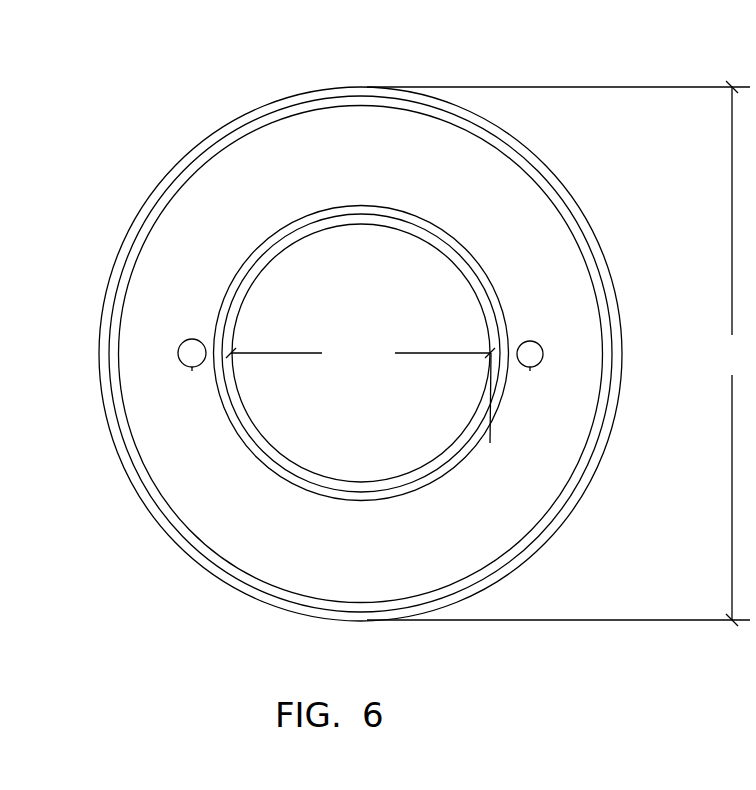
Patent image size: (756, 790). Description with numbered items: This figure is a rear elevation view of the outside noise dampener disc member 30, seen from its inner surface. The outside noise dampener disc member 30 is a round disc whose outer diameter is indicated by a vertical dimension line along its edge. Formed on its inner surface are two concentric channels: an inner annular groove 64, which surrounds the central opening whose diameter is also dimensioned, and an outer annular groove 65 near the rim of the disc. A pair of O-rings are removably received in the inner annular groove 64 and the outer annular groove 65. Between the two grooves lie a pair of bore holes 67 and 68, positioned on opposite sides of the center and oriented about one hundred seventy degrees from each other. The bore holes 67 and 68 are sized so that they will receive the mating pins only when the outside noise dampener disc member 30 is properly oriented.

The outside noise dampener disc member 30 is at (110, 156).
The inner annular groove 64 is at (438, 235).
The outer annular groove 65 is at (230, 129).
The bore hole 67 is at (179, 343).
The bore hole 68 is at (531, 339).